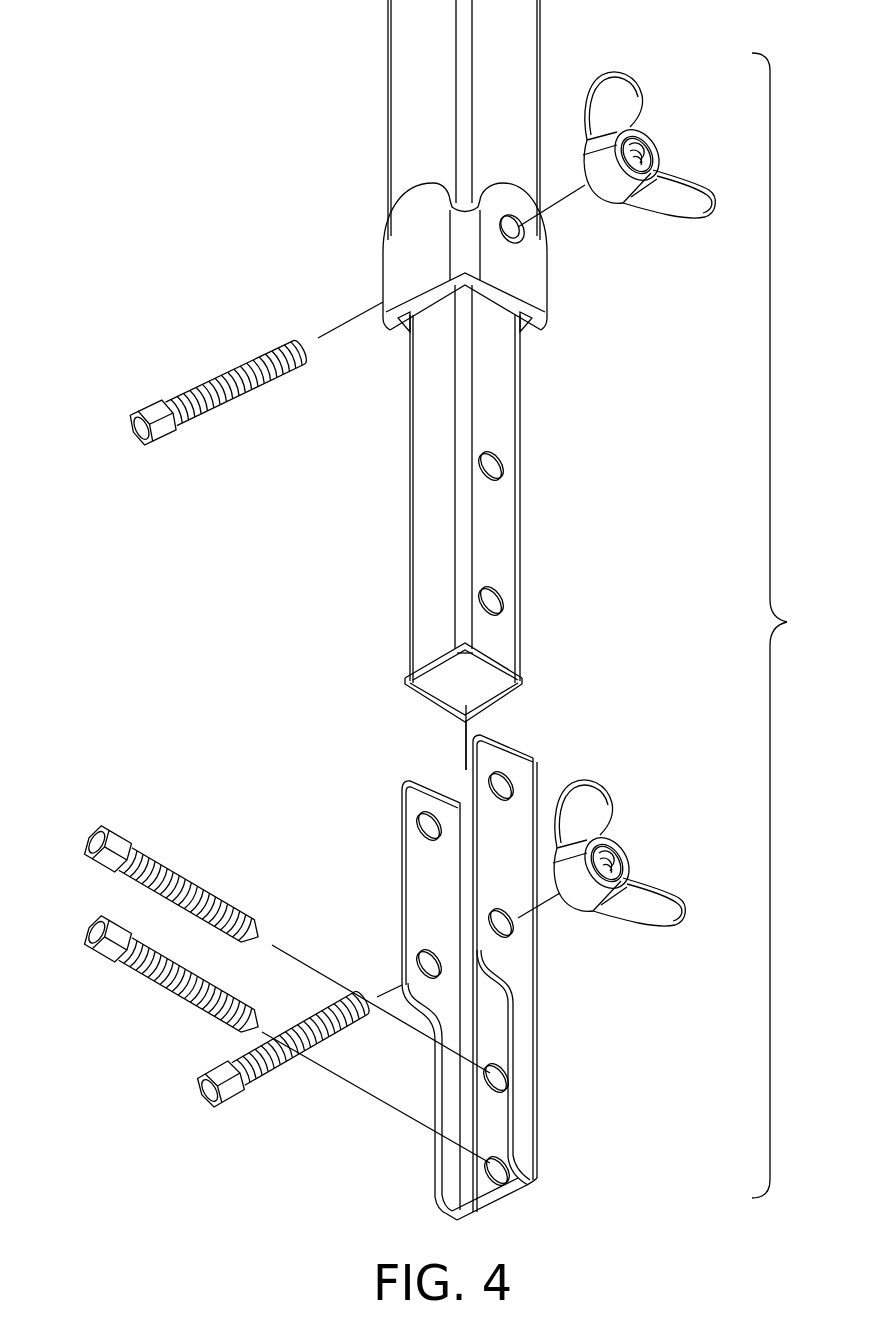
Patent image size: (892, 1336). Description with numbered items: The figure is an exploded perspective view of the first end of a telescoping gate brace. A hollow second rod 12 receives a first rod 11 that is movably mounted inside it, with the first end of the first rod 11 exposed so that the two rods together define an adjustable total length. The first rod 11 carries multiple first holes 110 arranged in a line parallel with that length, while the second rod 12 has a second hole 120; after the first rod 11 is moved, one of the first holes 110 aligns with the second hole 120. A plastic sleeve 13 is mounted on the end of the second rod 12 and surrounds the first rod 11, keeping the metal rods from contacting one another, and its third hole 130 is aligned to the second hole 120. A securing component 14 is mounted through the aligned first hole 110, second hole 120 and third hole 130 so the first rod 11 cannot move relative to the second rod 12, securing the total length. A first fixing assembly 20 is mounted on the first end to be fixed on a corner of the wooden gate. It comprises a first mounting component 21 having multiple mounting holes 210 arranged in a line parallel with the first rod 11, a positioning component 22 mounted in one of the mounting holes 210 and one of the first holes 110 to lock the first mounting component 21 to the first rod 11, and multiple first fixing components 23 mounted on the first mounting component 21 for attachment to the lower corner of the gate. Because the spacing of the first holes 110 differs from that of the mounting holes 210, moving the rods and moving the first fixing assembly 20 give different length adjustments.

The first rod 11 is at (463, 527).
The second rod 12 is at (412, 122).
The sleeve 13 is at (471, 260).
The securing component 14 is at (230, 376).
The first holes 110 is at (502, 463).
The second hole 120 is at (521, 229).
The third hole 130 is at (508, 214).
The first fixing assembly 20 is at (297, 782).
The first mounting component 21 is at (433, 970).
The mounting holes 210 is at (420, 817).
The positioning component 22 is at (207, 1085).
The first fixing components 23 is at (150, 983).